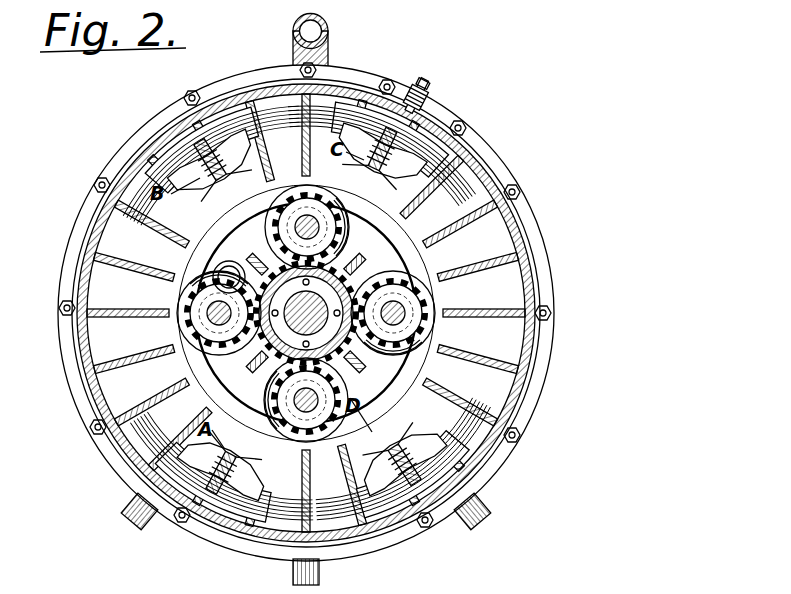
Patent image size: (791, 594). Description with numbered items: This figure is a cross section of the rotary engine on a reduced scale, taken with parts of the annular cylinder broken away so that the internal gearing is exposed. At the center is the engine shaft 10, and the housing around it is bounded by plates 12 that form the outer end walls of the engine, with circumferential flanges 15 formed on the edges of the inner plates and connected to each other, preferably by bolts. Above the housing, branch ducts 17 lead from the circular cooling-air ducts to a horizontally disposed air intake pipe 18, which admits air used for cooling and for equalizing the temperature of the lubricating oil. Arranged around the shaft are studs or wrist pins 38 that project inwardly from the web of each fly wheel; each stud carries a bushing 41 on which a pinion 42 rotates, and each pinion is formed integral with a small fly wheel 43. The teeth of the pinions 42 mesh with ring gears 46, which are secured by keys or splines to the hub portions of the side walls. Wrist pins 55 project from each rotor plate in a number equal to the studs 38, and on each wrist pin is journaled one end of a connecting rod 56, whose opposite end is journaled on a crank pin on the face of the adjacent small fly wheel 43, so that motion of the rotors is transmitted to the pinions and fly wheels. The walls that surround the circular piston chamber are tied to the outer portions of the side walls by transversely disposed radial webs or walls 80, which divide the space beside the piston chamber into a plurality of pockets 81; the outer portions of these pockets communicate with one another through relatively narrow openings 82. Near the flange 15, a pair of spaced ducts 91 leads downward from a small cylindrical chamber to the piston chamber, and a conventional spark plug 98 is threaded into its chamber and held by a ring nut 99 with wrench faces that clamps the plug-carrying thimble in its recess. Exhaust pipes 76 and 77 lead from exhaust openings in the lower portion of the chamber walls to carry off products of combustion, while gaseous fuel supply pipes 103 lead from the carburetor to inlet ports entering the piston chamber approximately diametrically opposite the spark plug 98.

The shaft 10 is at (340, 272).
The plates 12 is at (252, 212).
The circumferential flanges 15 is at (490, 178).
The branch ducts 17 is at (300, 50).
The air intake pipe 18 is at (294, 30).
The studs or wrist pins 38 is at (322, 228).
The bushing 41 is at (200, 326).
The pinion 42 is at (300, 185).
The small fly wheel 43 is at (398, 280).
The ring gears 46 is at (297, 316).
The wrist pins 55 is at (220, 266).
The connecting rod 56 is at (218, 278).
The exhaust pipe 76 is at (314, 574).
The exhaust pipe 77 is at (480, 506).
The radial webs or walls 80 is at (262, 122).
The pockets 81 is at (105, 332).
The openings 82 is at (128, 176).
The ducts 91 is at (306, 312).
The spark plug 98 is at (437, 88).
The ring nut 99 is at (446, 112).
The gaseous fuel supply pipes 103 is at (124, 502).